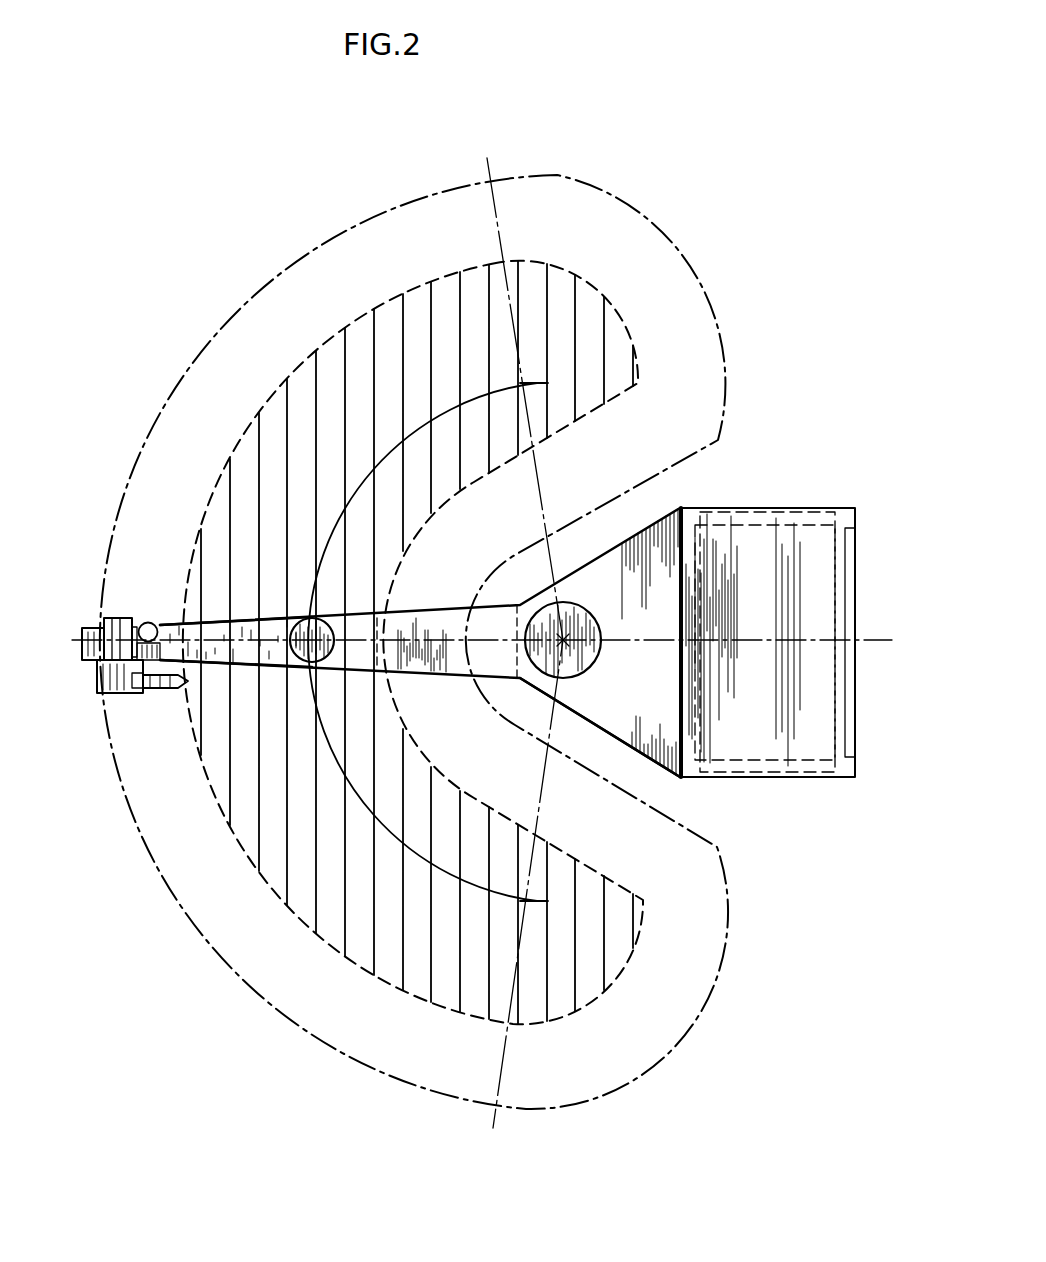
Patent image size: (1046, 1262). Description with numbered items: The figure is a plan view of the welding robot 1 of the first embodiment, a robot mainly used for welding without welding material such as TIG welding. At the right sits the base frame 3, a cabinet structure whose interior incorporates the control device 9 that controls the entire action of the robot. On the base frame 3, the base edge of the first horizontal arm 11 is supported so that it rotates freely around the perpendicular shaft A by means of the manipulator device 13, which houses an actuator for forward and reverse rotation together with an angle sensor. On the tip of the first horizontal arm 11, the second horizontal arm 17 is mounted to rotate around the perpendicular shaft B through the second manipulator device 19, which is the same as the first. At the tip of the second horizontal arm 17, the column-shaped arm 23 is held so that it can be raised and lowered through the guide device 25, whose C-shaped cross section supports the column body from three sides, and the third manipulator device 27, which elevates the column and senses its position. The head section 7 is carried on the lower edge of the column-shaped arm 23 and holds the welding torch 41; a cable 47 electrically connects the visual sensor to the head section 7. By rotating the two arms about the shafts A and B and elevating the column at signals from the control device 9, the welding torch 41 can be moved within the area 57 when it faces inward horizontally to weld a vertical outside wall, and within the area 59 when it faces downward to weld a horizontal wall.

The welding robot 1 is at (757, 464).
The base frame 3 is at (856, 538).
The control device 9 is at (830, 731).
The first horizontal arm 11 is at (452, 614).
The manipulator device 13 is at (568, 706).
The second horizontal arm 17 is at (248, 652).
The second manipulator device 19 is at (333, 653).
The column-shaped arm 23 is at (85, 628).
The guide device 25 is at (124, 618).
The third manipulator device 27 is at (152, 623).
The welding torch 41 is at (160, 690).
The cable 47 is at (95, 668).
The area 57 is at (620, 310).
The area 59 is at (598, 192).
The head section 7 is at (93, 694).
The perpendicular shaft A is at (565, 636).
The perpendicular shaft B is at (312, 624).